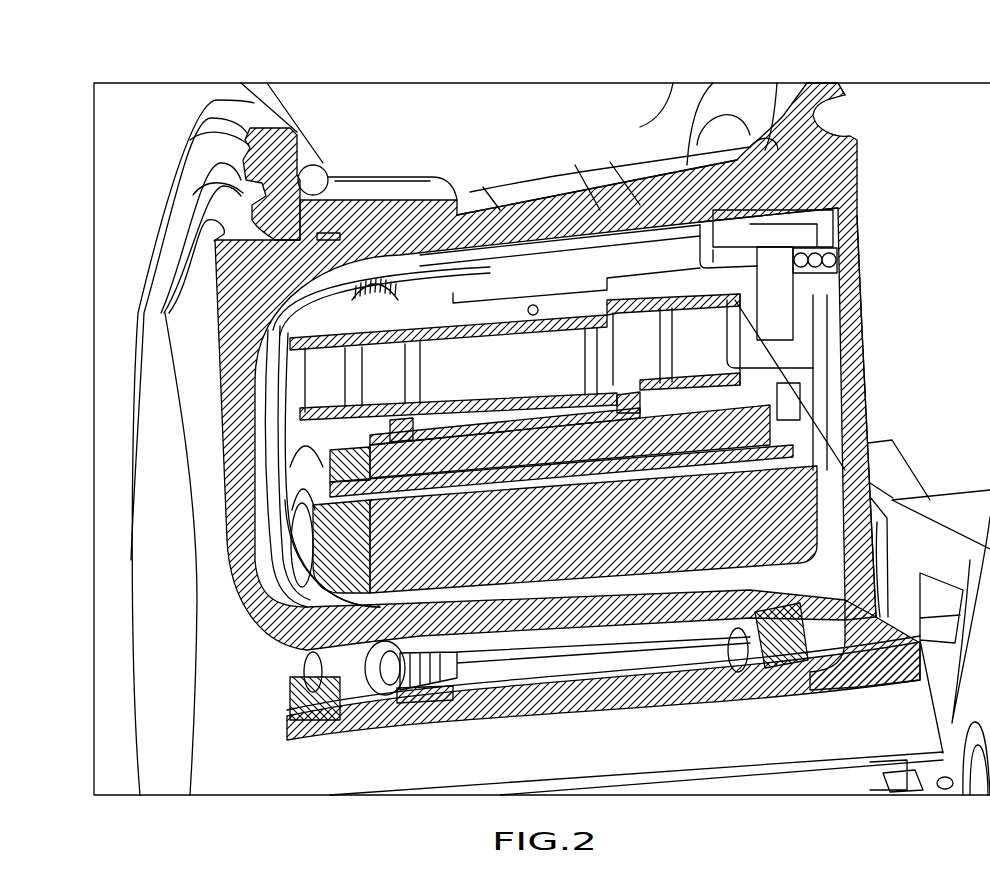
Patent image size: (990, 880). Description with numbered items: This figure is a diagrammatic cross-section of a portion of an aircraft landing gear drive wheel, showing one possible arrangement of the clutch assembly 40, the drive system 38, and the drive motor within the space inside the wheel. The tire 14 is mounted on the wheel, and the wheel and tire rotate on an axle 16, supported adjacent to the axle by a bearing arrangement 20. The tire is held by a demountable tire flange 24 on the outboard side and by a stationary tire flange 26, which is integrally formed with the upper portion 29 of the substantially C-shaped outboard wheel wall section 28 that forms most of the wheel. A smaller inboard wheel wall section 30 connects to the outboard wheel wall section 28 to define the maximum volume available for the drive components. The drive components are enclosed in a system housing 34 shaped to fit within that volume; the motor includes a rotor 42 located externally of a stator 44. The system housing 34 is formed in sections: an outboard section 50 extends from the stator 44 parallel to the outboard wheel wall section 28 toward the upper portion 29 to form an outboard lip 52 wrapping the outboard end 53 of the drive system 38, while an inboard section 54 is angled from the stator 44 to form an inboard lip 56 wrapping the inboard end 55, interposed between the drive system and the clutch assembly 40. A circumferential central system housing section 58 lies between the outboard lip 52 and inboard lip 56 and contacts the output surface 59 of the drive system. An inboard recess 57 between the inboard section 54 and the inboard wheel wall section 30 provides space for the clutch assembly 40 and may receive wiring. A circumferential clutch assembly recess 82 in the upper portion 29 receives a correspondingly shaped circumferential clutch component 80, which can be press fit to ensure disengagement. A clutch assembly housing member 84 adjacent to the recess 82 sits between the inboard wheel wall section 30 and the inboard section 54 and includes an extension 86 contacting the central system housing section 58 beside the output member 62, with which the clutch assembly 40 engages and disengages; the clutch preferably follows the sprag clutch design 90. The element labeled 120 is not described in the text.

The tire 14 is at (339, 98).
The axle 16 is at (617, 750).
The bearing arrangement 20 is at (465, 647).
The demountable tire flange 24 is at (260, 135).
The stationary tire flange 26 is at (810, 96).
The outboard wheel wall section 28 is at (232, 447).
The upper portion of outboard wheel wall section 29 is at (623, 200).
The inboard wheel wall section 30 is at (860, 385).
The system housing 34 is at (290, 510).
The drive system 38 is at (320, 362).
The clutch assembly 40 is at (800, 193).
The rotor 42 is at (577, 453).
The stator 44 is at (577, 527).
The outboard section 50 is at (277, 418).
The outboard lip 52 is at (307, 337).
The outboard end 53 is at (283, 390).
The inboard section 54 is at (810, 445).
The inboard end 55 is at (722, 337).
The inboard lip 56 is at (660, 303).
The inboard recess 57 is at (827, 362).
The central system housing section 58 is at (465, 313).
The output surface 59 is at (534, 318).
The output member 62 is at (503, 323).
The circumferential clutch component 80 is at (777, 283).
The circumferential clutch assembly recess 82 is at (813, 253).
The clutch assembly housing member 84 is at (817, 290).
The extension 86 is at (510, 277).
The clutch design 90 is at (850, 259).
The gear 120 is at (380, 282).